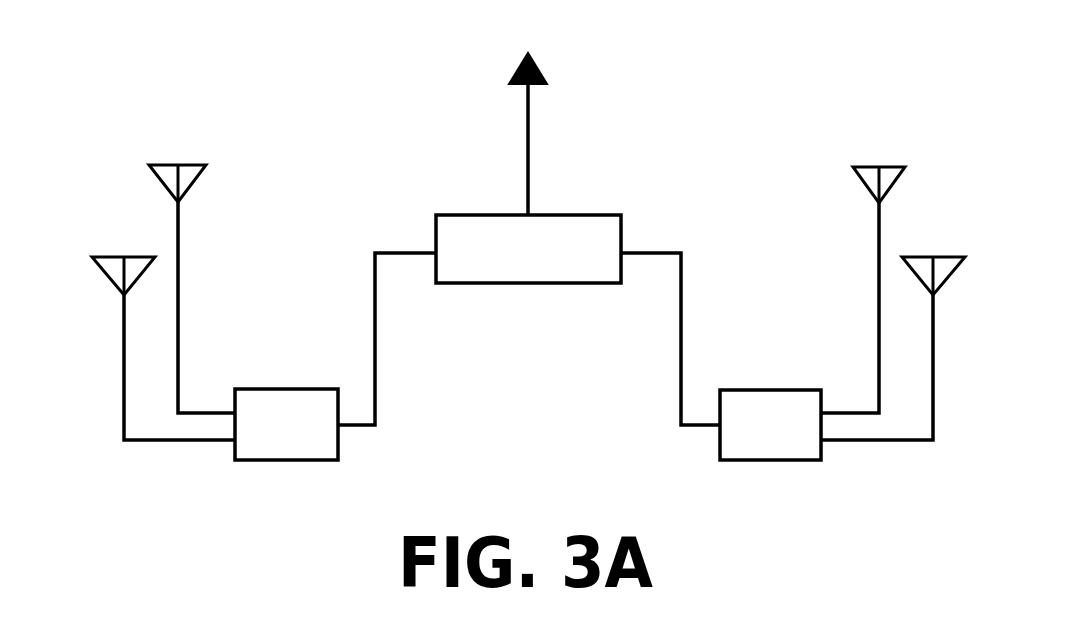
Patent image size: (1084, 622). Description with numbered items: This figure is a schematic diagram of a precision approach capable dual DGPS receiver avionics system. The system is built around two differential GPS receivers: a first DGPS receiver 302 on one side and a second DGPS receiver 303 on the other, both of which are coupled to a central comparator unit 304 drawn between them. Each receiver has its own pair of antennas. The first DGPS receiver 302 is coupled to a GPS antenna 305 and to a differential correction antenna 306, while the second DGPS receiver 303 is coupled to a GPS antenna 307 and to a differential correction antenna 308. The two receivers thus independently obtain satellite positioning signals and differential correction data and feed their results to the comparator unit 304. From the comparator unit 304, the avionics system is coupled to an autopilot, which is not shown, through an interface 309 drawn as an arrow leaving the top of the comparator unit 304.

The DGPS receiver 302 is at (285, 389).
The DGPS receiver 303 is at (775, 390).
The comparator unit 304 is at (480, 215).
The GPS antenna 305 is at (191, 188).
The differential correction antenna 306 is at (113, 257).
The GPS antenna 307 is at (852, 173).
The differential correction antenna 308 is at (927, 257).
The interface 309 is at (512, 72).